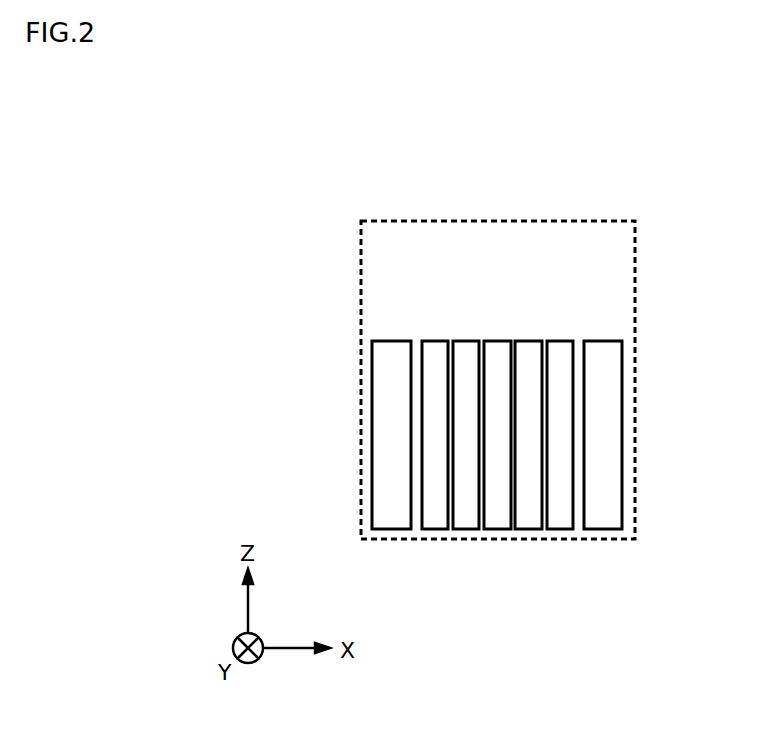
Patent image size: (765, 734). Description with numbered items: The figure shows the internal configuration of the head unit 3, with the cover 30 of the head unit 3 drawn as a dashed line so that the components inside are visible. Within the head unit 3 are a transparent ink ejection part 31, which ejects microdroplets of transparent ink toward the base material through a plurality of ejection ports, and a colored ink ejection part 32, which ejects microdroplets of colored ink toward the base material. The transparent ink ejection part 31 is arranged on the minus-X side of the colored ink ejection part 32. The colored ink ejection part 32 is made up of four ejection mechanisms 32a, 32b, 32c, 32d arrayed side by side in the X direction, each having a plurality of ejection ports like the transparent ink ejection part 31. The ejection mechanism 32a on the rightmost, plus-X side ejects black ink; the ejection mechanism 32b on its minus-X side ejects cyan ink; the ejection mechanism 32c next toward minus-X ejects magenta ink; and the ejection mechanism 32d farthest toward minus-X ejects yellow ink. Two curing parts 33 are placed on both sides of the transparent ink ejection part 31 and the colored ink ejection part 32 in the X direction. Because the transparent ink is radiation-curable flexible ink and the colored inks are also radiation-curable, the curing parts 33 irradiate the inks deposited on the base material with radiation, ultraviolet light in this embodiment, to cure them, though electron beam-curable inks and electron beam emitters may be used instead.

The head unit 3 is at (354, 201).
The cover 30 is at (641, 285).
The transparent ink ejection part 31 is at (436, 530).
The colored ink ejection part 32 is at (540, 629).
The ejection mechanism 32a is at (557, 530).
The ejection mechanism 32b is at (527, 530).
The ejection mechanism 32c is at (497, 530).
The ejection mechanism 32d is at (466, 530).
The curing parts 33 is at (372, 494).